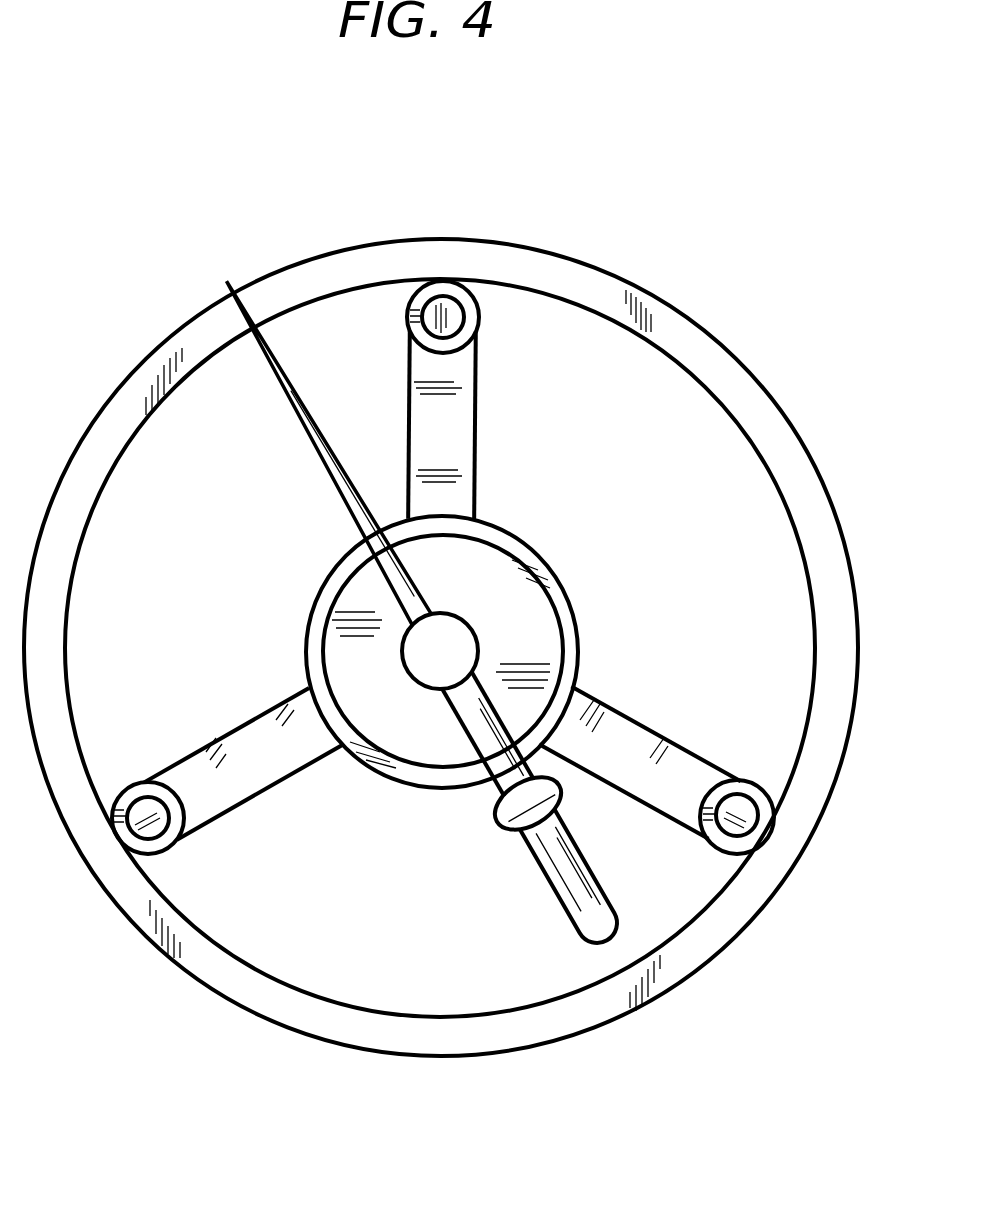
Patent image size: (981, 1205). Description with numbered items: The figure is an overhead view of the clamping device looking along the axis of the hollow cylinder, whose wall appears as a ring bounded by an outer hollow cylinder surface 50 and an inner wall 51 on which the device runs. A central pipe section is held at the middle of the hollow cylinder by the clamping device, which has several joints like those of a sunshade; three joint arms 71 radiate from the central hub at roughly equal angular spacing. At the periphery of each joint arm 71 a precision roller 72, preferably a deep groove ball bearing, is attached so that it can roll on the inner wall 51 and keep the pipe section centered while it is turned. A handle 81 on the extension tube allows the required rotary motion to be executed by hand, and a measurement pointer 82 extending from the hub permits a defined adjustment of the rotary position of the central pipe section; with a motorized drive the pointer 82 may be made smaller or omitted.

The outer rim of handwheel 50 is at (260, 1020).
The inner rim surface 51 is at (413, 1018).
The spoke 71 is at (630, 721).
The spoke boss with hole 72 is at (729, 852).
The handle knob 81 is at (585, 948).
The pointer indicator 82 is at (228, 278).